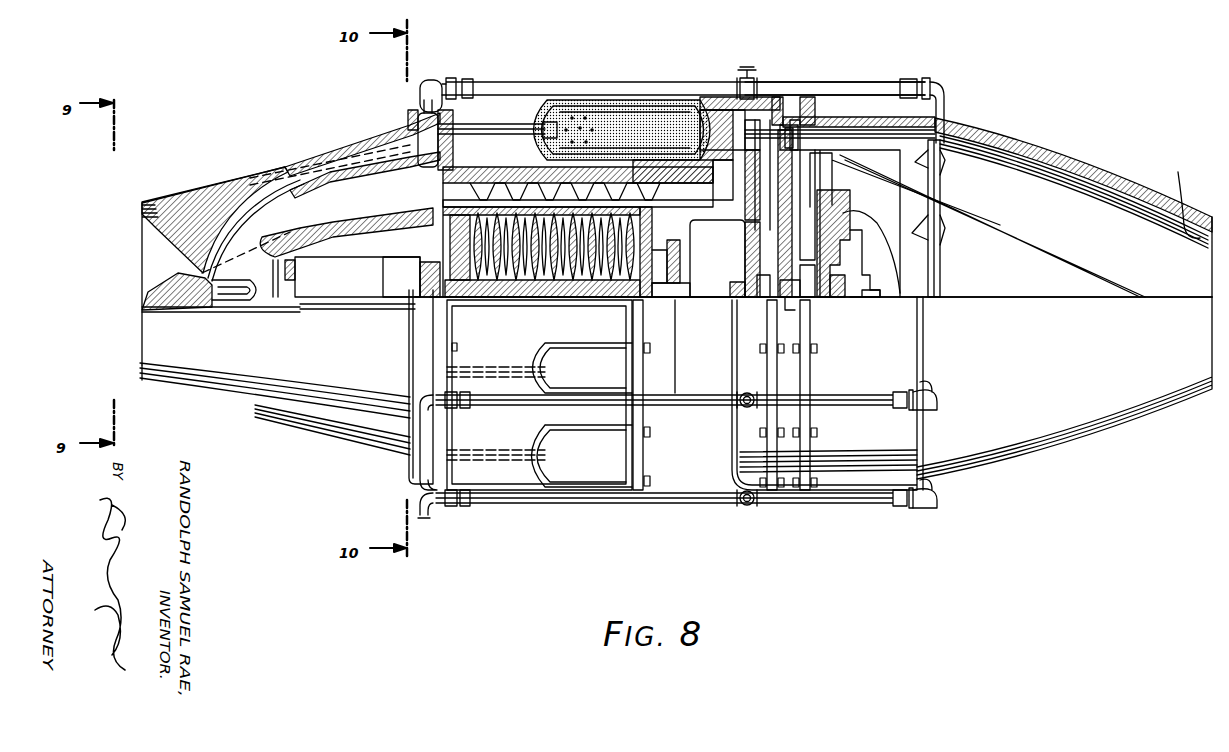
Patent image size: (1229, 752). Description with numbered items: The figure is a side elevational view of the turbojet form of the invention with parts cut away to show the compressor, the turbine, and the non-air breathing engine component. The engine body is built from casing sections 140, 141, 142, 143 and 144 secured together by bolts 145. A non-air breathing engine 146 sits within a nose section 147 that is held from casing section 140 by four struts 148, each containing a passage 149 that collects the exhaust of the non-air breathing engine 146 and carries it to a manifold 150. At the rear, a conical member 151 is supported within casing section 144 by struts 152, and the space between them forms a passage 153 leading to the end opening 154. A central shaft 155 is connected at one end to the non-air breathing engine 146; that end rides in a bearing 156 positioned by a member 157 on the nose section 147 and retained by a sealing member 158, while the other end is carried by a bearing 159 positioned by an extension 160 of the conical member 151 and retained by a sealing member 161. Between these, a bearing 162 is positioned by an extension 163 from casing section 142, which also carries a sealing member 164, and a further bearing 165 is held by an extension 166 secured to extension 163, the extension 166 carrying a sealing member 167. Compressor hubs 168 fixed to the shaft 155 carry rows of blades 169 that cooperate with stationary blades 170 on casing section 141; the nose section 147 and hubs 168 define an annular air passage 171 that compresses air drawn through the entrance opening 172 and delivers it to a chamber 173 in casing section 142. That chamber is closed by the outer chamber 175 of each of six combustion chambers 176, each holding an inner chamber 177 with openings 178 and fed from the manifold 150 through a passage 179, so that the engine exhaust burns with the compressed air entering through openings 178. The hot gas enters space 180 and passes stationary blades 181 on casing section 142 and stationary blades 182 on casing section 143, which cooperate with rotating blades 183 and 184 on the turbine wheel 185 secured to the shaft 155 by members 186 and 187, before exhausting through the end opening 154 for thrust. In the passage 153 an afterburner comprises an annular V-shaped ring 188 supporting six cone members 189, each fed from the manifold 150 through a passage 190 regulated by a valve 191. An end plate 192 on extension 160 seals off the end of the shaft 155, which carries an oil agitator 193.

The casing section 140 is at (222, 410).
The casing section 141 is at (498, 426).
The casing section 142 is at (703, 508).
The casing section 143 is at (798, 460).
The casing section 144 is at (1096, 446).
The bolts 145 is at (456, 348).
The non-air breathing engine 146 is at (332, 265).
The nose section 147 is at (362, 228).
The struts 148 is at (142, 230).
The passage 149 is at (345, 160).
The manifold 150 is at (412, 118).
The conical member 151 is at (1118, 282).
The struts 152 is at (860, 180).
The passage 153 is at (1108, 174).
The end opening 154 is at (1182, 196).
The shaft 155 is at (604, 298).
The bearing 156 is at (438, 283).
The member 157 is at (412, 255).
The sealing member 158 is at (458, 298).
The bearing 159 is at (838, 302).
The extension 160 is at (845, 212).
The sealing member 161 is at (815, 302).
The bearing 162 is at (732, 298).
The extension 163 is at (704, 222).
The sealing member 164 is at (766, 195).
The bearing 165 is at (665, 300).
The extension 166 is at (680, 262).
The sealing member 167 is at (660, 258).
The compressor hubs 168 is at (503, 264).
The blades 169 is at (468, 195).
The stationary blades 170 is at (482, 185).
The annular air passage 171 is at (418, 135).
The entrance opening 172 is at (155, 268).
The chamber 173 is at (700, 110).
The outer chamber 175 is at (603, 100).
The combustion chambers 176 is at (545, 114).
The inner chamber 177 is at (626, 130).
The openings 178 is at (585, 130).
The passage 179 is at (465, 128).
The space 180 is at (740, 110).
The stationary blades 181 is at (760, 130).
The stationary blades 182 is at (815, 115).
The rotating blades 183 is at (758, 150).
The rotating blades 184 is at (805, 137).
The turbine wheel 185 is at (785, 220).
The member 186 is at (795, 302).
The member 187 is at (768, 300).
The annular V-shaped ring 188 is at (942, 187).
The cone members 189 is at (945, 163).
The passage 190 is at (852, 82).
The valve 191 is at (753, 68).
The end plate 192 is at (855, 268).
The oil agitator 193 is at (850, 300).